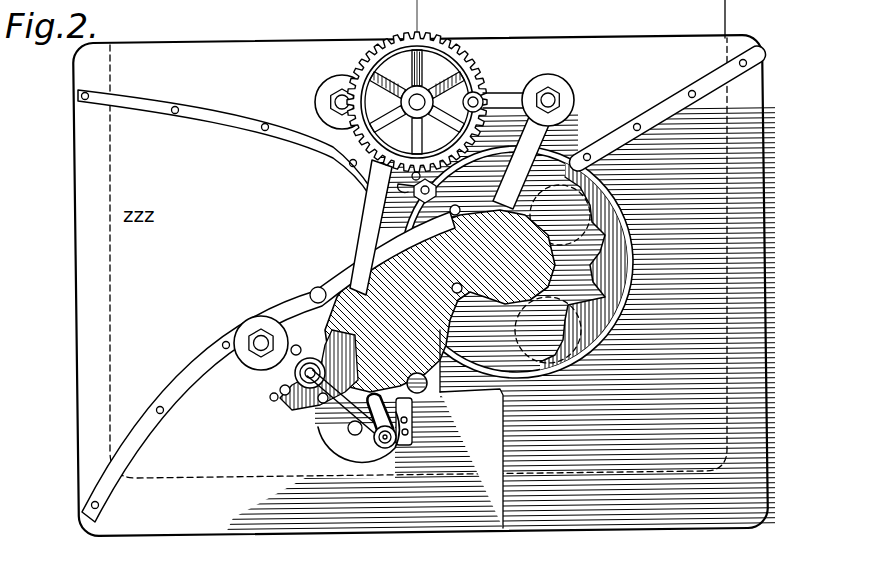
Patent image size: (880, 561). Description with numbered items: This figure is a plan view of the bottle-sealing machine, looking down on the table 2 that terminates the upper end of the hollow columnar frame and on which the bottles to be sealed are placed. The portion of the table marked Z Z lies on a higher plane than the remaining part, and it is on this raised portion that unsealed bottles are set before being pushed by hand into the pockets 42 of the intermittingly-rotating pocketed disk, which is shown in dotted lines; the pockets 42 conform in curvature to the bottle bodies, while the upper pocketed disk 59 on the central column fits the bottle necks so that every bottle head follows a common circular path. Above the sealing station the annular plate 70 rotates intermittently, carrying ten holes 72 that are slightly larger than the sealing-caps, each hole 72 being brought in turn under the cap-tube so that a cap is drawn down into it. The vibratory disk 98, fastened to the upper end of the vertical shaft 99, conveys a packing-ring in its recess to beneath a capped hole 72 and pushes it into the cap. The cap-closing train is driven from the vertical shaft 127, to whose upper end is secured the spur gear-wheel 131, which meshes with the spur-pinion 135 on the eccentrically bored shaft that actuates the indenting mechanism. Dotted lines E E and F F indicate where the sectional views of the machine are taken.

The table 2 is at (768, 404).
The pockets 42 is at (518, 198).
The pocketed disk 59 is at (578, 172).
The annular plate 70 is at (337, 270).
The holes 72 is at (310, 292).
The disk 98 is at (330, 436).
The vertical shaft 99 is at (350, 431).
The vertical shaft 127 is at (408, 102).
The spur gear-wheel 131 is at (471, 72).
The spur-pinion 135 is at (418, 205).
The raised portion of the table ZZ is at (743, 308).
The dotted line F F is at (364, 292).
The dotted line E E is at (440, 392).